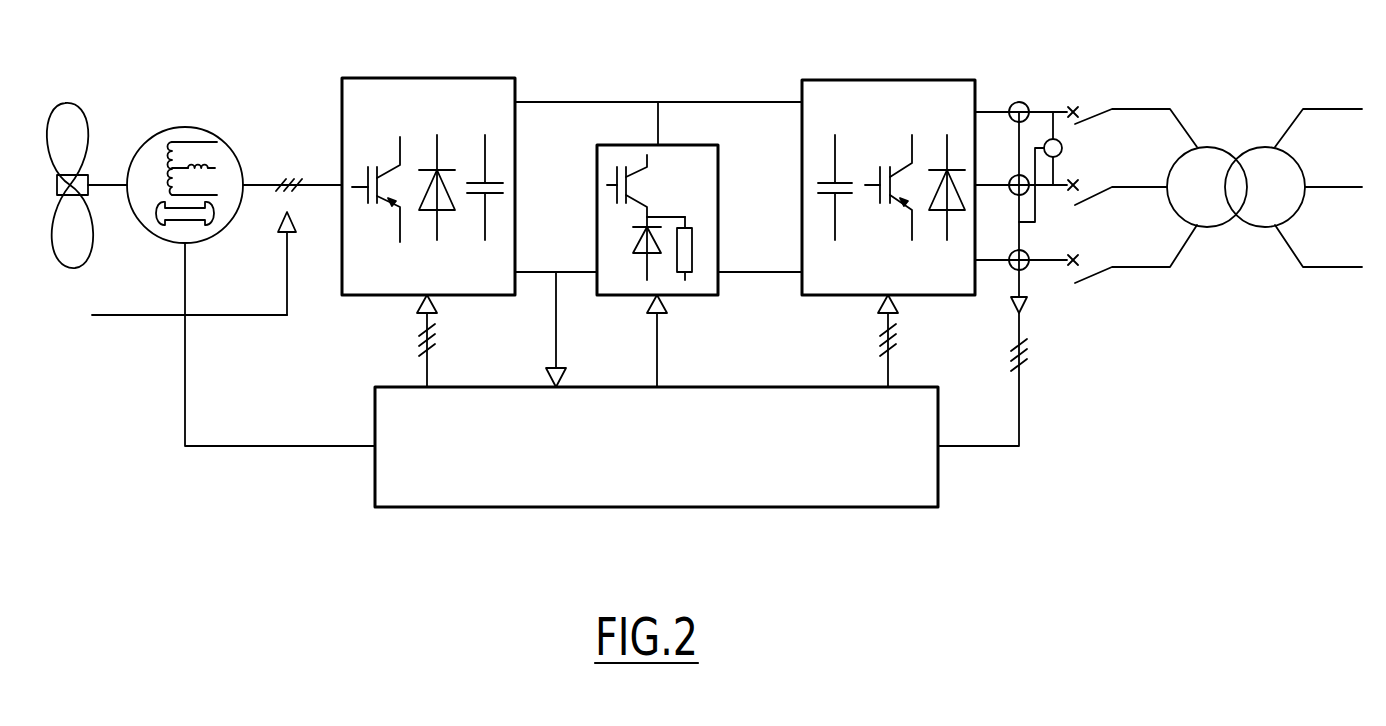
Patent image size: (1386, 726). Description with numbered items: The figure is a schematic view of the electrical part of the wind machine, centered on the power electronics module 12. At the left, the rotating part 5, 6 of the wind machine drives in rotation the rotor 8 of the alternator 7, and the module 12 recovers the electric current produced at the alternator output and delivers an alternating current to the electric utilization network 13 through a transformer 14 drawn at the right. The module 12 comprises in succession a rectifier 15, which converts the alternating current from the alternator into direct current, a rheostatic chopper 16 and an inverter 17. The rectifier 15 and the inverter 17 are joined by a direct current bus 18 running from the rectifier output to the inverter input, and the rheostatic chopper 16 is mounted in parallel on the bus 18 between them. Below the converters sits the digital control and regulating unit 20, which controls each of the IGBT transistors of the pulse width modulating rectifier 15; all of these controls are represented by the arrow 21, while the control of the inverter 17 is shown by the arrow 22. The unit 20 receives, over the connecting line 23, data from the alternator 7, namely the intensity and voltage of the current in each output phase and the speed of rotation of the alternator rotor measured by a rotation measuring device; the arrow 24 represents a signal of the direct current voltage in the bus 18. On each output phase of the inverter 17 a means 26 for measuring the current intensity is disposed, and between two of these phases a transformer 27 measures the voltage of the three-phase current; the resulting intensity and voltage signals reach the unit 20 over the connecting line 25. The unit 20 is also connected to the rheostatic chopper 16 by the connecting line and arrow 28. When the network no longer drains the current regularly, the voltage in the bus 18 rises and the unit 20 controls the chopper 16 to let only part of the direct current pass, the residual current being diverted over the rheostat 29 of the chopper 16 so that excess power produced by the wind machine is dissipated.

The rotating part 5 is at (86, 176).
The rotating part 6 is at (78, 116).
The alternator 7 is at (238, 152).
The rotor 8 is at (174, 225).
The power electronics module 12 is at (1090, 340).
The electric utilization network 13 is at (1335, 118).
The transformer 14 is at (1224, 136).
The rectifier 15 is at (418, 88).
The rheostatic chopper 16 is at (627, 220).
The inverter 17 is at (906, 88).
The direct current bus 18 is at (613, 100).
The digital control and regulating unit 20 is at (780, 507).
The arrow 21 is at (427, 368).
The arrow 22 is at (888, 368).
The connecting line 23 is at (185, 400).
The arrow 24 is at (556, 338).
The connecting line 25 is at (1019, 407).
The means for measuring the intensity of the current 26 is at (1007, 122).
The transformer for measuring the voltage 27 is at (1063, 148).
The connecting line and arrow 28 is at (657, 352).
The rheostat 29 is at (692, 250).